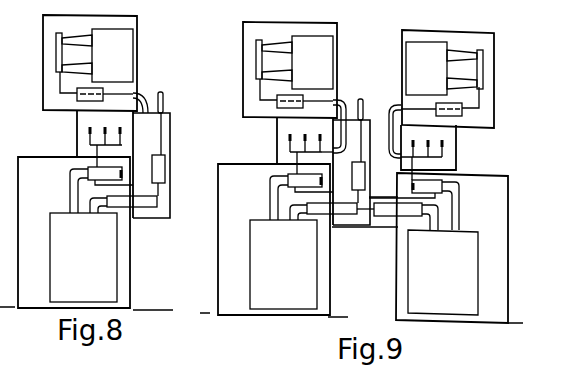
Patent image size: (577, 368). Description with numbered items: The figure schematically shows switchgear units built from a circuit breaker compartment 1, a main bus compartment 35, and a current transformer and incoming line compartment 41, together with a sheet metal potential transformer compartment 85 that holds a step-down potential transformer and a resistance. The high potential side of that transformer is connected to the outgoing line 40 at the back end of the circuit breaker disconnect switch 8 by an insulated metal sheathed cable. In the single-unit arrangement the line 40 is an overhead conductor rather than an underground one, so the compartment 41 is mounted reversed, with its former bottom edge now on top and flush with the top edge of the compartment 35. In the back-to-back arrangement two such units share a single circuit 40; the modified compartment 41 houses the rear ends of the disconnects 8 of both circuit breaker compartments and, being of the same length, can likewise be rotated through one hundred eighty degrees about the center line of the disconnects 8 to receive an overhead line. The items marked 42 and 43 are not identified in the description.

In FIG. 8, the circuit breaker compartment 1 is at (30, 190).
In FIG. 9, the circuit breaker compartment 1 is at (228, 283).
In FIG. 9, the circuit breaker disconnect switch 8 is at (348, 215).
In FIG. 8, the main bus compartment 35 is at (82, 127).
In FIG. 9, the main bus compartment 35 is at (282, 134).
In FIG. 8, the outgoing line conductor 40 is at (163, 105).
In FIG. 9, the outgoing line conductor 40 is at (363, 102).
In FIG. 8, the current transformer and incoming line compartment 41 is at (162, 205).
In FIG. 9, the current transformer and incoming line compartment 41 is at (362, 137).
In FIG. 8, the valve 42 is at (165, 162).
In FIG. 8, the wire 43 is at (160, 153).
In FIG. 8, the potential transformer compartment 85 is at (50, 45).
In FIG. 9, the potential transformer compartment 85 is at (248, 52).